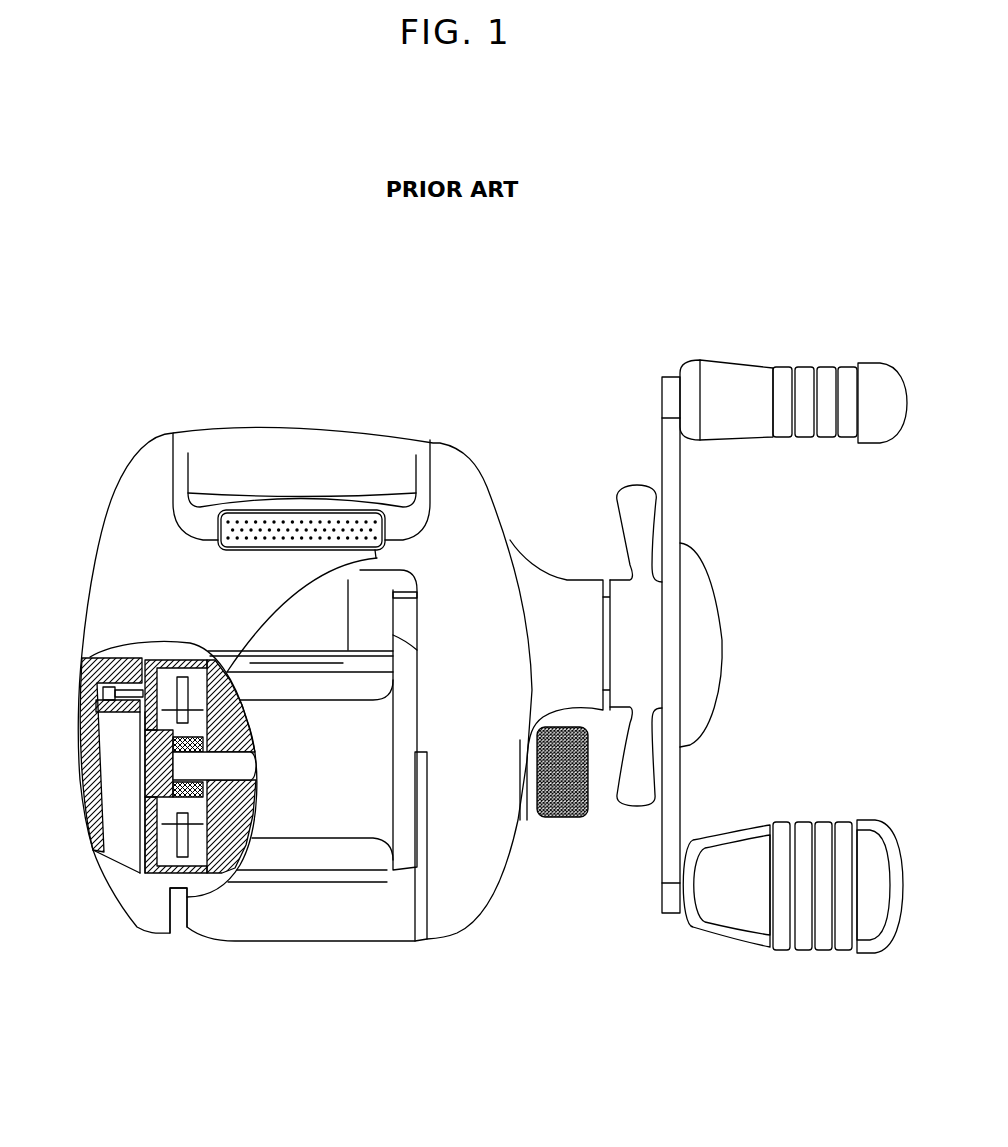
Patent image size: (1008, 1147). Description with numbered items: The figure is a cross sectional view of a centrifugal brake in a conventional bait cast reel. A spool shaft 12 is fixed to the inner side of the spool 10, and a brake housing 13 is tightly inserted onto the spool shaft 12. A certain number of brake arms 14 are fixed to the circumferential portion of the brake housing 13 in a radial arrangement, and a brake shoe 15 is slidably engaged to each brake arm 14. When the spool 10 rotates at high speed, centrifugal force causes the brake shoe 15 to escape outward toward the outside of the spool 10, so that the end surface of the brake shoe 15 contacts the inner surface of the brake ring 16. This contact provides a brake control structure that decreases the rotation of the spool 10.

The spool 10 is at (258, 822).
The spool shaft 12 is at (177, 767).
The brake housing 13 is at (187, 897).
The brake arm 14 is at (177, 728).
The brake shoe 15 is at (176, 690).
The brake ring 16 is at (145, 663).